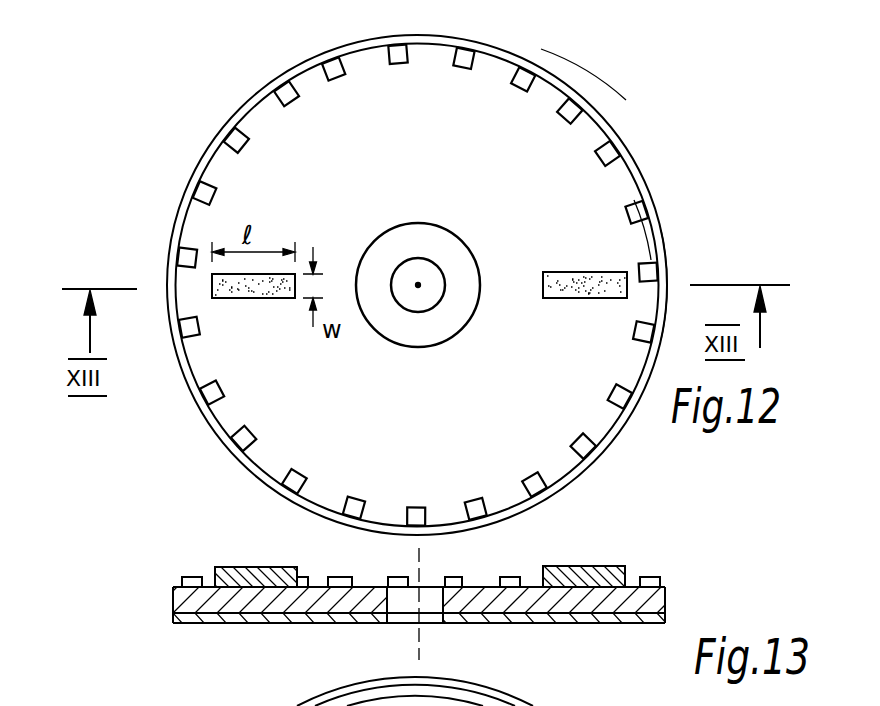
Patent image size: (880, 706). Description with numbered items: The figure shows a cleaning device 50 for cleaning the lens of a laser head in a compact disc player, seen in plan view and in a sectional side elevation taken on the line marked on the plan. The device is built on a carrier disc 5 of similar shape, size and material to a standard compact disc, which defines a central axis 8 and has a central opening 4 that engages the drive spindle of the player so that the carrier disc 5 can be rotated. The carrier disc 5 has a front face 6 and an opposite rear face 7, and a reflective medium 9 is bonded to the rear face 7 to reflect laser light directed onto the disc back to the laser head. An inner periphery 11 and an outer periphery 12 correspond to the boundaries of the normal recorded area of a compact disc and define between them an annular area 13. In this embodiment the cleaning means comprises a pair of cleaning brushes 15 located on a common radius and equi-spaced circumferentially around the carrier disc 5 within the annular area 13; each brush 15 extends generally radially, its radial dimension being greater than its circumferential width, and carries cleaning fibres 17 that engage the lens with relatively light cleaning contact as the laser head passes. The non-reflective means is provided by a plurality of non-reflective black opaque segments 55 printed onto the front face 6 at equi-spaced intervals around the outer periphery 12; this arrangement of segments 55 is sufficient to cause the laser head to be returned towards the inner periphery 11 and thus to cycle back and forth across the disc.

In FIG. 12, the opening 4 is at (423, 312).
In FIG. 13, the opening 4 is at (388, 597).
In FIG. 12, the carrier disc 5 is at (582, 137).
In FIG. 13, the carrier disc 5 is at (655, 606).
In FIG. 12, the front face 6 is at (633, 245).
In FIG. 13, the front face 6 is at (637, 583).
In FIG. 13, the rear face 7 is at (606, 623).
In FIG. 12, the central axis 8 is at (418, 285).
In FIG. 13, the central axis 8 is at (422, 573).
In FIG. 13, the reflective medium 9 is at (642, 623).
In FIG. 12, the inner periphery 11 is at (418, 223).
In FIG. 12, the outer periphery 12 is at (670, 280).
In FIG. 13, the outer periphery 12 is at (665, 587).
In FIG. 12, the annular area 13 is at (533, 103).
In FIG. 12, the cleaning brush 15 is at (228, 292).
In FIG. 13, the cleaning brush 15 is at (283, 535).
In FIG. 12, the cleaning fibres 17 is at (272, 292).
In FIG. 12, the cleaning device 50 is at (640, 102).
In FIG. 13, the cleaning device 50 is at (178, 652).
In FIG. 12, the non-reflective black opaque segments 55 is at (333, 62).
In FIG. 13, the non-reflective black opaque segments 55 is at (192, 575).